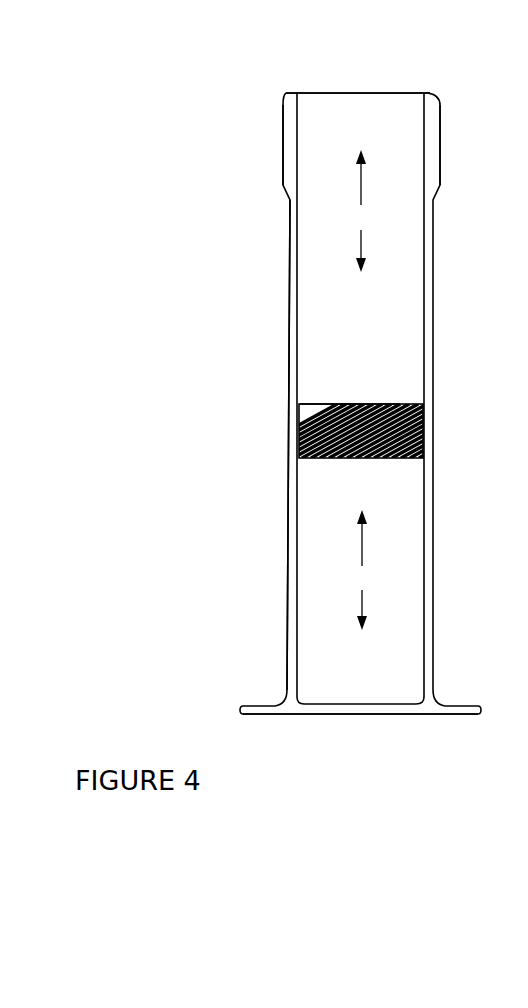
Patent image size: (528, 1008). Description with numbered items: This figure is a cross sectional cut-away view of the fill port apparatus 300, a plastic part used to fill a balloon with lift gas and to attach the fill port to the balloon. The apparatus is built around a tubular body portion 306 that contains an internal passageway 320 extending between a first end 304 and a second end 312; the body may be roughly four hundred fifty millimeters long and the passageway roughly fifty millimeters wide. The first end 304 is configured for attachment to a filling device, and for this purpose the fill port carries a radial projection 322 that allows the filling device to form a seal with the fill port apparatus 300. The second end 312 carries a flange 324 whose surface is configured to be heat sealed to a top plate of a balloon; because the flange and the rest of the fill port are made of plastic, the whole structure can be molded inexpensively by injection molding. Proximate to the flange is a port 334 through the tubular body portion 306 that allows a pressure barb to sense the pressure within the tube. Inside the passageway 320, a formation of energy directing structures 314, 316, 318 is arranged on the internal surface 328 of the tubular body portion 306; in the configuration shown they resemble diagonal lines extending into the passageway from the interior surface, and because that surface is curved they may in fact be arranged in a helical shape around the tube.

The fill port apparatus 300 is at (158, 296).
The first end 304 is at (340, 64).
The tubular body portion 306 is at (290, 280).
The second end 312 is at (340, 747).
The energy directing structure 314 is at (398, 404).
The energy directing structure 316 is at (372, 404).
The energy directing structure 318 is at (345, 404).
The internal passageway 320 is at (361, 390).
The radial projection 322 is at (283, 150).
The flange 324 is at (243, 714).
The internal surface 328 is at (322, 500).
The port 334 is at (290, 580).